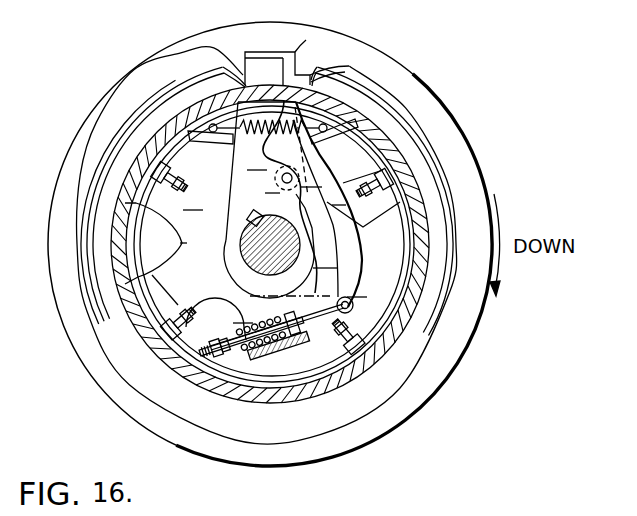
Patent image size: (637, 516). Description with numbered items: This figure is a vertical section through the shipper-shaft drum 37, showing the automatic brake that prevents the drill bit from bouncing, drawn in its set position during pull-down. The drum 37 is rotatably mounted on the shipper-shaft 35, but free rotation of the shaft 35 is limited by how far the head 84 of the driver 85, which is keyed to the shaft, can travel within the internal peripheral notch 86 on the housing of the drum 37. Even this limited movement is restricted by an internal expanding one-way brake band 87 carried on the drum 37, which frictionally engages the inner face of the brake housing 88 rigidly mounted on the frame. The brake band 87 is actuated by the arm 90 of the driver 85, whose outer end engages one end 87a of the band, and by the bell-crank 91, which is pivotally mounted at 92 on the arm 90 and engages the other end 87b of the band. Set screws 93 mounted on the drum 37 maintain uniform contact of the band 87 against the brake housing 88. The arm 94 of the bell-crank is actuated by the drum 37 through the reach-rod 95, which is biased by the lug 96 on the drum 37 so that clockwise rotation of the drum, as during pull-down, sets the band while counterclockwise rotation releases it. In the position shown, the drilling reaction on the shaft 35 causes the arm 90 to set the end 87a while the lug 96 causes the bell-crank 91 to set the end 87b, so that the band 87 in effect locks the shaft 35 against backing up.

The shipper-shaft 35 is at (255, 244).
The shipper-shaft drum 37 is at (97, 121).
The head of driver 84 is at (245, 60).
The driver 85 is at (305, 77).
The internal peripheral notch 86 is at (291, 50).
The brake band 87 is at (377, 152).
The end of brake band 87a is at (233, 107).
The other end of brake band 87b is at (270, 110).
The brake housing 88 is at (407, 173).
The arm of driver 90 is at (257, 157).
The bell-crank 91 is at (364, 226).
The pivot 92 is at (282, 177).
The set screws 93 is at (171, 196).
The arm of bell-crank 94 is at (352, 276).
The reach-rod 95 is at (327, 313).
The lug 96 is at (290, 343).